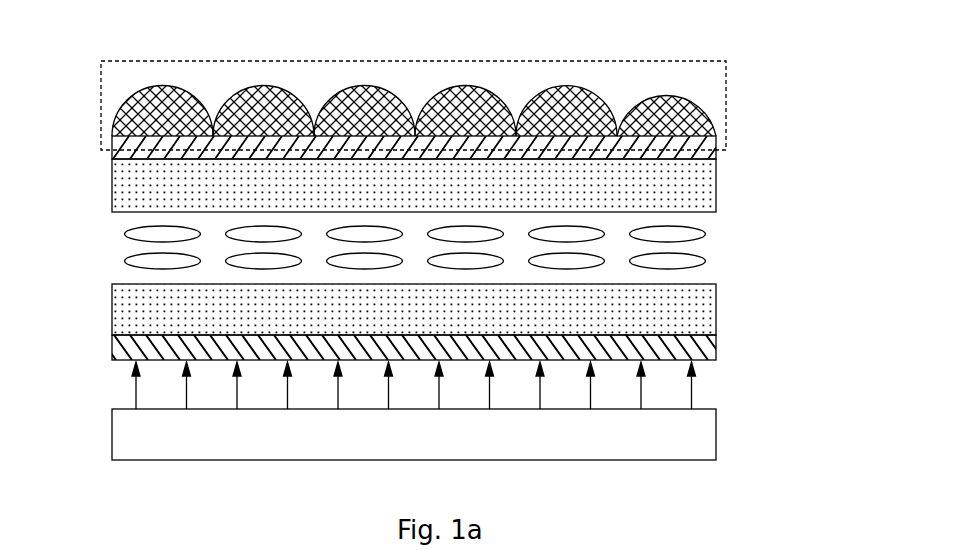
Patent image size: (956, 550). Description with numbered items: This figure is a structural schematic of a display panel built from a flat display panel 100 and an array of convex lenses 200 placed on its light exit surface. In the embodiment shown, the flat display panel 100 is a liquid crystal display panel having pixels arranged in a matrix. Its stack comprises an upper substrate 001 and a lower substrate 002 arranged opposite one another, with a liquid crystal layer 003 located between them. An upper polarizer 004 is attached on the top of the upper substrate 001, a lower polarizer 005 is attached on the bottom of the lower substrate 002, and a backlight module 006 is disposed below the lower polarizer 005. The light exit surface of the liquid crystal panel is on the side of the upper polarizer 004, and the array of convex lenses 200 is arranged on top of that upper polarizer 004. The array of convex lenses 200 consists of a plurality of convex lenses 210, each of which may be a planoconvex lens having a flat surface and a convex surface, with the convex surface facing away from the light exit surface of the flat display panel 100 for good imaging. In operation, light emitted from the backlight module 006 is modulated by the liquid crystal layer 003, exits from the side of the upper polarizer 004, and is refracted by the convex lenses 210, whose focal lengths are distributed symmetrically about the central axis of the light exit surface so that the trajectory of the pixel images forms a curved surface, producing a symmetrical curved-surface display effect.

The array of convex lenses 200 is at (378, 77).
The convex lens 210 is at (287, 95).
The upper polarizer 004 is at (716, 150).
The upper substrate 001 is at (716, 186).
The liquid crystal layer 003 is at (716, 246).
The lower substrate 002 is at (716, 309).
The lower polarizer 005 is at (716, 346).
The backlight module 006 is at (456, 411).
The flat display panel 100 is at (486, 298).